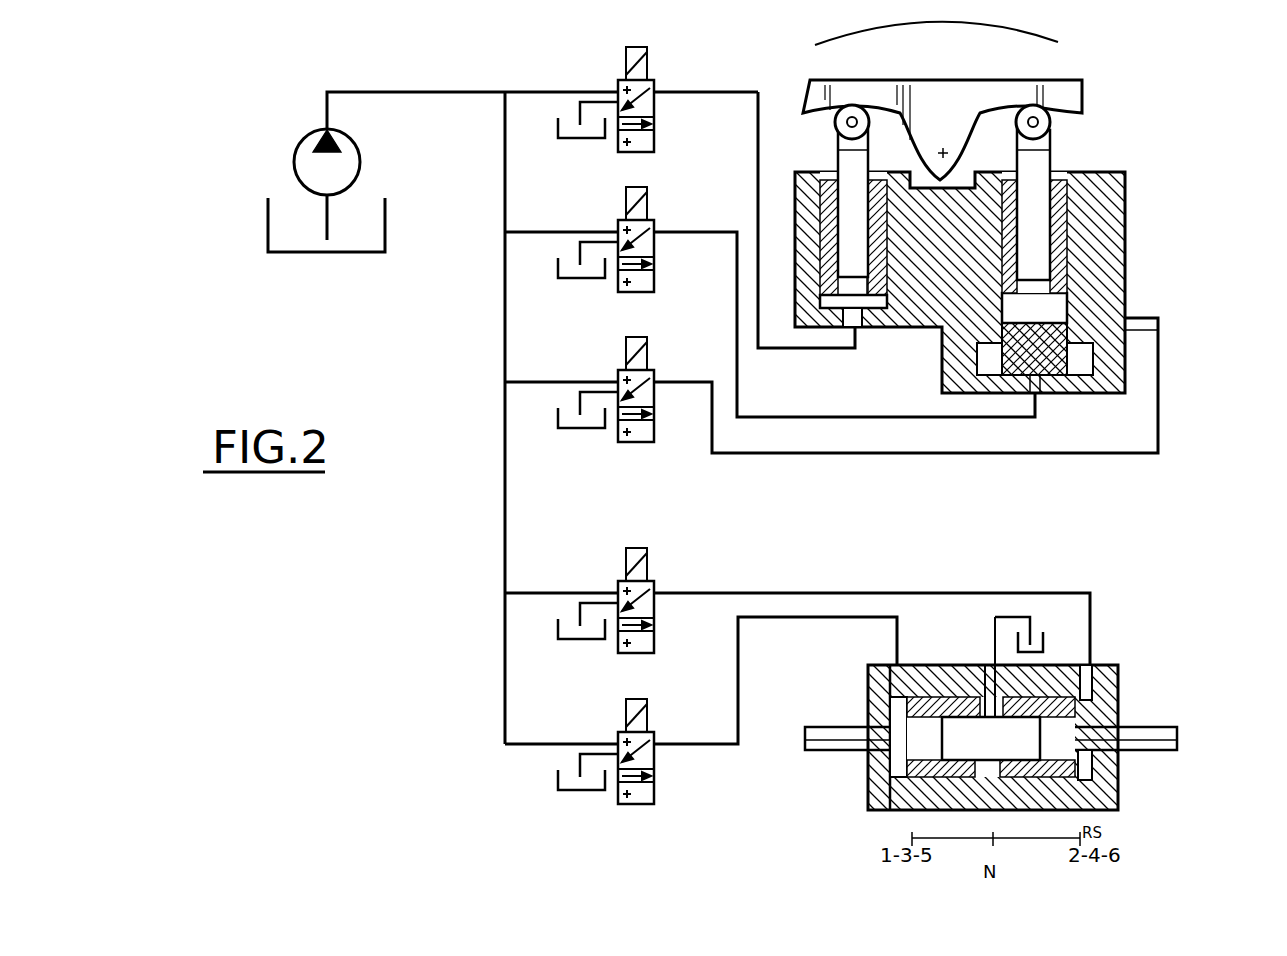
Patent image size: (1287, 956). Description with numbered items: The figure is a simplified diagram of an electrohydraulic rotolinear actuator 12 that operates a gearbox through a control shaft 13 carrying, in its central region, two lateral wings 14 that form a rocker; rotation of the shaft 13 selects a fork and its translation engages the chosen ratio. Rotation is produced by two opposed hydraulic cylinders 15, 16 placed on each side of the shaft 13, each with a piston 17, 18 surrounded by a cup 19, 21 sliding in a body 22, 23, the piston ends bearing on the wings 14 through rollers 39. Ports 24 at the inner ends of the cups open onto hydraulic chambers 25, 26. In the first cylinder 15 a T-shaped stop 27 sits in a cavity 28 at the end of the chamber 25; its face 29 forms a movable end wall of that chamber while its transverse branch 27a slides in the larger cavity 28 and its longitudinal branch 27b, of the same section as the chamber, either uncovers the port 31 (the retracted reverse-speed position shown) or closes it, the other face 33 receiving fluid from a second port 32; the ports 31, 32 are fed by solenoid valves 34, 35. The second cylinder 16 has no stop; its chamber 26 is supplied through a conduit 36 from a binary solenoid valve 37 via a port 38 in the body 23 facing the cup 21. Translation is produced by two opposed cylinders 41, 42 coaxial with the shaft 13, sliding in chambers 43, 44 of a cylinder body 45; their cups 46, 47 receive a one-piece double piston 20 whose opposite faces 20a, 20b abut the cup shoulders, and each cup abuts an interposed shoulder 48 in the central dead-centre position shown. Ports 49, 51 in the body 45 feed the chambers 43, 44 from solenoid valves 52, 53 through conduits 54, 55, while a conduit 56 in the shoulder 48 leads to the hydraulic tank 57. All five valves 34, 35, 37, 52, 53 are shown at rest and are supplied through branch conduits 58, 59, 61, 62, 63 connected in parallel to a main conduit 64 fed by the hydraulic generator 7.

The hydraulic generator 7 is at (292, 148).
The rotolinear actuator 12 is at (1009, 307).
The control shaft 13 is at (975, 88).
The lateral wings 14 is at (878, 84).
The hydraulic cylinder 15 is at (1068, 165).
The hydraulic cylinder 16 is at (802, 164).
The piston 17 is at (1070, 255).
The piston 18 is at (820, 215).
The cup 19 is at (1125, 212).
The double piston 20 is at (942, 800).
The piston face 20a is at (900, 802).
The piston face 20b is at (1050, 795).
The cup 21 is at (820, 248).
The cylinder body 22 is at (1125, 288).
The cylinder body 23 is at (878, 332).
The ports 24 is at (838, 300).
The hydraulic chamber 25 is at (965, 330).
The hydraulic chamber 26 is at (822, 303).
The stop 27 is at (1075, 395).
The transverse branch 27a is at (1130, 400).
The longitudinal branch 27b is at (1105, 400).
The cavity 28 is at (1125, 360).
The face 29 is at (1010, 400).
The port 31 is at (1158, 330).
The port 32 is at (1040, 400).
The face 33 is at (990, 400).
The solenoid valve 34 is at (596, 447).
The solenoid valve 35 is at (660, 240).
The conduit 36 is at (758, 150).
The binary solenoid valve 37 is at (664, 80).
The port 38 is at (850, 330).
The rollers 39 is at (835, 128).
The cylinder 41 is at (1110, 805).
The cylinder 42 is at (880, 795).
The chamber 43 is at (1100, 785).
The chamber 44 is at (890, 755).
The cylinder body 45 is at (1118, 665).
The cup 46 is at (1045, 690).
The cup 47 is at (930, 700).
The shoulder 48 is at (990, 785).
The port 49 is at (1088, 672).
The port 51 is at (880, 680).
The solenoid valve 52 is at (665, 580).
The solenoid valve 53 is at (655, 776).
The conduit 54 is at (830, 593).
The conduit 55 is at (738, 660).
The conduit 56 is at (988, 665).
The hydraulic tank 57 is at (1034, 617).
The conduit 58 is at (540, 92).
The conduit 59 is at (528, 232).
The conduit 61 is at (528, 382).
The conduit 62 is at (565, 593).
The conduit 63 is at (530, 744).
The main conduit 64 is at (505, 405).